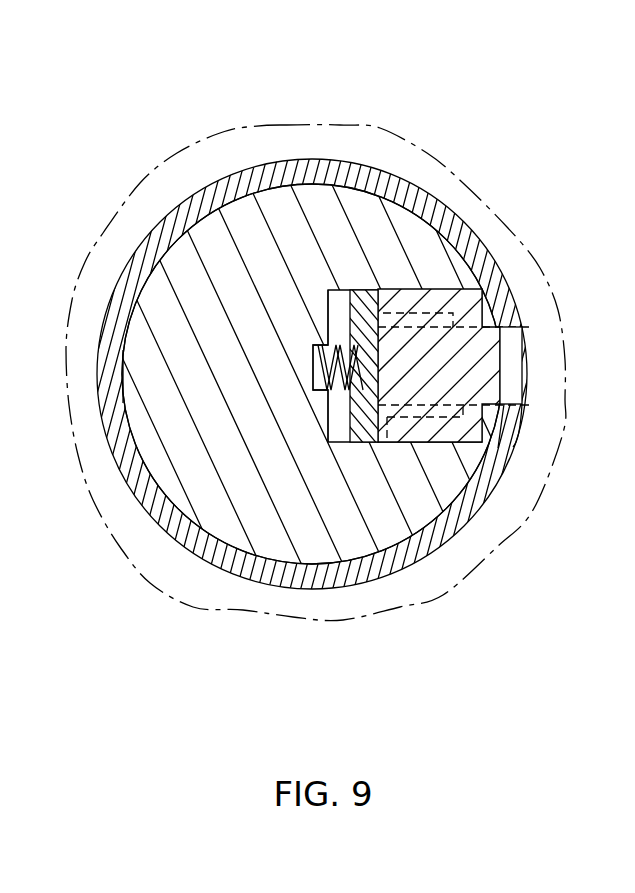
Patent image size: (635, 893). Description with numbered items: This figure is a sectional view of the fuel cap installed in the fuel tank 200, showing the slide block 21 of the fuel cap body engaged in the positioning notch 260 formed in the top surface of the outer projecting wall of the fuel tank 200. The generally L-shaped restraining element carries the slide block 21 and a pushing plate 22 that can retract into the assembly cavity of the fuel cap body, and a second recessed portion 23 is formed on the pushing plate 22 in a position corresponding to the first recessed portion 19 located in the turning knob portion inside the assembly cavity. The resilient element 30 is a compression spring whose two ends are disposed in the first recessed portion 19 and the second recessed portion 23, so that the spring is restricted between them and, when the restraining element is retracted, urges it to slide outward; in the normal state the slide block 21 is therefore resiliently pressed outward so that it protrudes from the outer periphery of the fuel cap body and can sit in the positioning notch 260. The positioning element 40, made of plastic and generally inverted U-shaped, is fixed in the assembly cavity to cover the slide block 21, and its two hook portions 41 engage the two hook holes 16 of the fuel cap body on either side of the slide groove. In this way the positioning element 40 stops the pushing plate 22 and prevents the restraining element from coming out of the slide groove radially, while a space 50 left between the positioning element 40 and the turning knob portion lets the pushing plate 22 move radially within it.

The fuel tank 200 is at (174, 566).
The hook portions 41 is at (436, 280).
The hook holes 16 is at (425, 515).
The space 50 is at (338, 420).
The positioning element 40 is at (440, 375).
The first recessed portion 19 is at (445, 318).
The pushing plate 22 is at (380, 303).
The second recessed portion 23 is at (313, 367).
The resilient element 30 is at (340, 345).
The slide block 21 is at (515, 352).
The positioning notch 260 is at (510, 407).